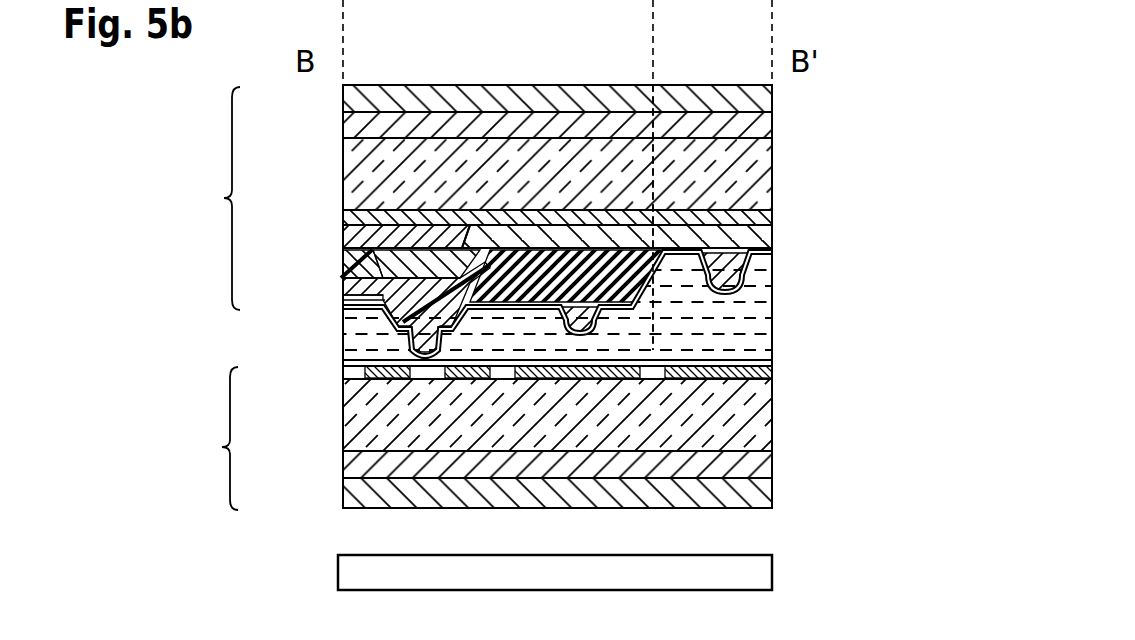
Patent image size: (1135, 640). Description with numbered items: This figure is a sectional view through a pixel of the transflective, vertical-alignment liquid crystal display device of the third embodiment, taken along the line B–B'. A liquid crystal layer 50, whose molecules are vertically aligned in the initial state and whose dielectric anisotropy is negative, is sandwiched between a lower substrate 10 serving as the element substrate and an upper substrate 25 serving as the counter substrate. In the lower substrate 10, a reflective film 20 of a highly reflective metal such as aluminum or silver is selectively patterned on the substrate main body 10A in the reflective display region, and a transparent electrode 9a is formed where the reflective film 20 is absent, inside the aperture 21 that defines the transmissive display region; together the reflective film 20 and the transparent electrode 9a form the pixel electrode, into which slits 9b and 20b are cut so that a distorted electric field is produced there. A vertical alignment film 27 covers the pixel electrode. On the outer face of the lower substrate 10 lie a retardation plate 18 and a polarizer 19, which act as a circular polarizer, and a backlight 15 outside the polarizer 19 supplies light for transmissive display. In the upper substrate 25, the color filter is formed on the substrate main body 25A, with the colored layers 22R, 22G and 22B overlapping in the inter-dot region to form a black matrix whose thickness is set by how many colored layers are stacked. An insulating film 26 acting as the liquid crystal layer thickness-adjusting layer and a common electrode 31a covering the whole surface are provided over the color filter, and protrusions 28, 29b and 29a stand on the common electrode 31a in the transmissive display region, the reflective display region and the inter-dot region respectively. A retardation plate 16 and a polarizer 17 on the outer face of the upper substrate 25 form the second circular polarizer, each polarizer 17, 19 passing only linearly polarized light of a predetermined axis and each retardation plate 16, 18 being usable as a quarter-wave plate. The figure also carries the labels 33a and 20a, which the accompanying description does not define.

The polarizer 17 is at (772, 95).
The retardation plate 16 is at (772, 122).
The substrate main body 25A is at (772, 155).
The colored layer 22R is at (772, 222).
The colored layer 22B is at (343, 240).
The colored layer 22G is at (343, 293).
The insulating film 26 is at (343, 265).
The common electrode 31a is at (772, 250).
The organic light emitting layer 33a is at (772, 257).
The protrusion 28 is at (772, 286).
The liquid crystal layer 50 is at (772, 320).
The alignment film 27 is at (772, 362).
The transparent electrode 9a is at (772, 375).
The substrate main body 10A is at (772, 430).
The retardation plate 18 is at (772, 462).
The polarizer 19 is at (772, 492).
The backlight 15 is at (772, 568).
The aperture 21 is at (653, 222).
The reflective film 20 is at (343, 218).
The upper substrate 25 is at (210, 198).
The lower substrate 10 is at (210, 438).
The connection electrode 20a is at (370, 376).
The slit 20b is at (500, 380).
The protrusion 29a is at (420, 345).
The protrusion 29b is at (586, 340).
The slit 9b is at (663, 382).